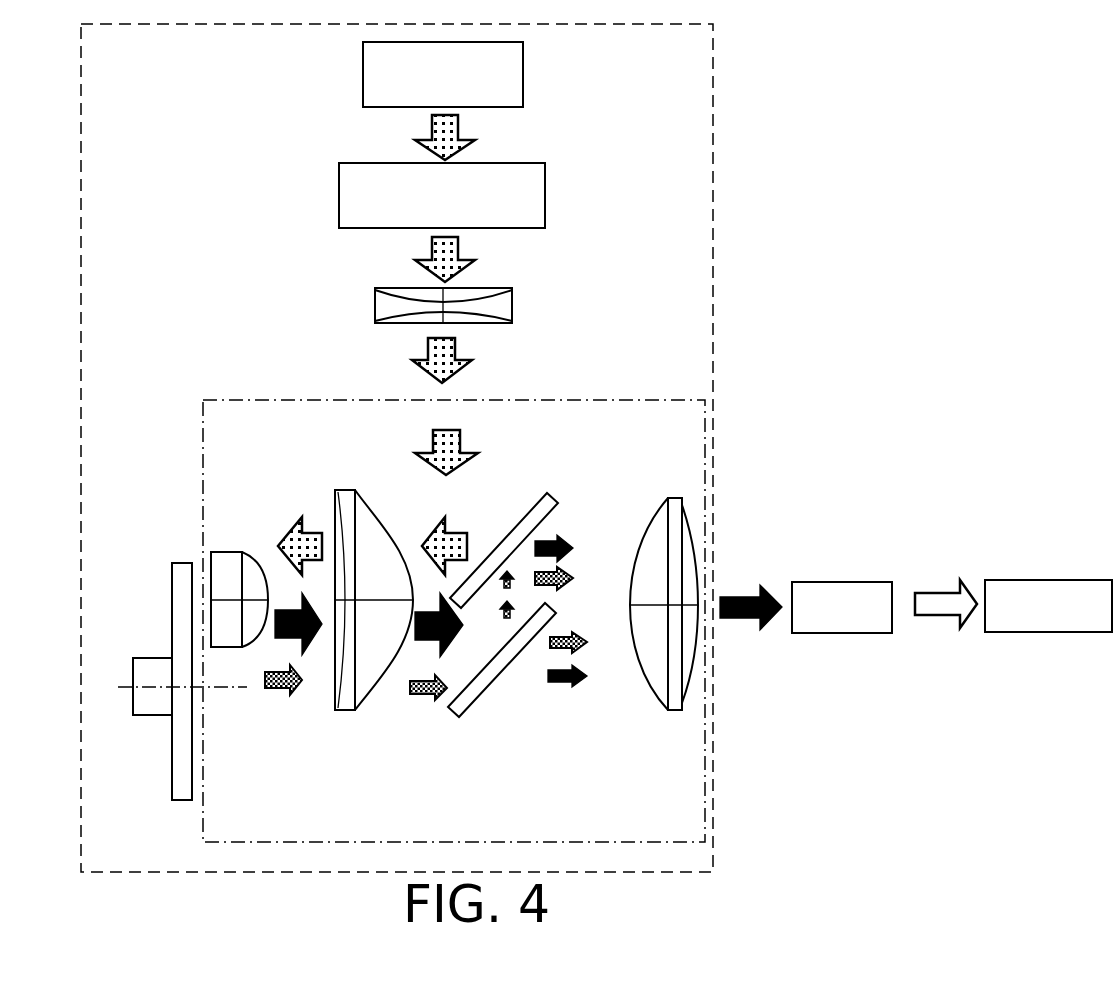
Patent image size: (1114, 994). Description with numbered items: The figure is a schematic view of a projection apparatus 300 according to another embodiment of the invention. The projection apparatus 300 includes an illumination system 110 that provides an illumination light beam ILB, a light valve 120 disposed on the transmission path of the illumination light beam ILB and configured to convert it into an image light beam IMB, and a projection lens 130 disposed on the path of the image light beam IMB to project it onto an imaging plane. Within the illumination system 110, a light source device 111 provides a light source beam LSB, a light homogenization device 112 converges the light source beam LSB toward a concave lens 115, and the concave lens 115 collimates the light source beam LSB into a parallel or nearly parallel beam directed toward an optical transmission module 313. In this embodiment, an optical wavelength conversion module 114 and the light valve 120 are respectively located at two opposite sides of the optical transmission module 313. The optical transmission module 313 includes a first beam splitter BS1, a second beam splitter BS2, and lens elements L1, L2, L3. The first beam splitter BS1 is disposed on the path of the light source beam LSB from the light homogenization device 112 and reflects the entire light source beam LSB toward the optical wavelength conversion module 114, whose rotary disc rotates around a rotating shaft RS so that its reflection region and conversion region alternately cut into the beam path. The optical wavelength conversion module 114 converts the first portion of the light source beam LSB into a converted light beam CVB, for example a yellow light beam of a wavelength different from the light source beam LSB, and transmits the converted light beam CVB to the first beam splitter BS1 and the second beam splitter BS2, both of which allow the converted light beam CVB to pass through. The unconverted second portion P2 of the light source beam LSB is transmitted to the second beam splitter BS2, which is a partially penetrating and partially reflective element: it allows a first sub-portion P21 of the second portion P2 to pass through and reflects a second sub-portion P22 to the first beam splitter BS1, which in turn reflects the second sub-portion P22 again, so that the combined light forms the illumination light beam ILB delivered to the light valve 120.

The illumination system 110 is at (713, 210).
The light source device 111 is at (363, 75).
The light homogenization device 112 is at (339, 195).
The optical wavelength conversion module 114 is at (182, 563).
The concave lens 115 is at (375, 302).
The light valve 120 is at (828, 582).
The projection lens 130 is at (1062, 580).
The projection apparatus 300 is at (1043, 881).
The optical transmission module 313 is at (203, 840).
The light source beam LSB is at (458, 125).
The lens element L1 is at (372, 510).
The lens element L2 is at (226, 552).
The lens element L3 is at (672, 712).
The first beam splitter BS1 is at (555, 500).
The second beam splitter BS2 is at (505, 668).
The converted light beam CVB is at (318, 640).
The second portion of the light source beam P2 is at (272, 692).
The first sub-portion P21 is at (585, 647).
The second sub-portion P22 is at (502, 582).
The rotating shaft RS is at (160, 685).
The illumination light beam ILB is at (745, 592).
The image light beam IMB is at (935, 592).